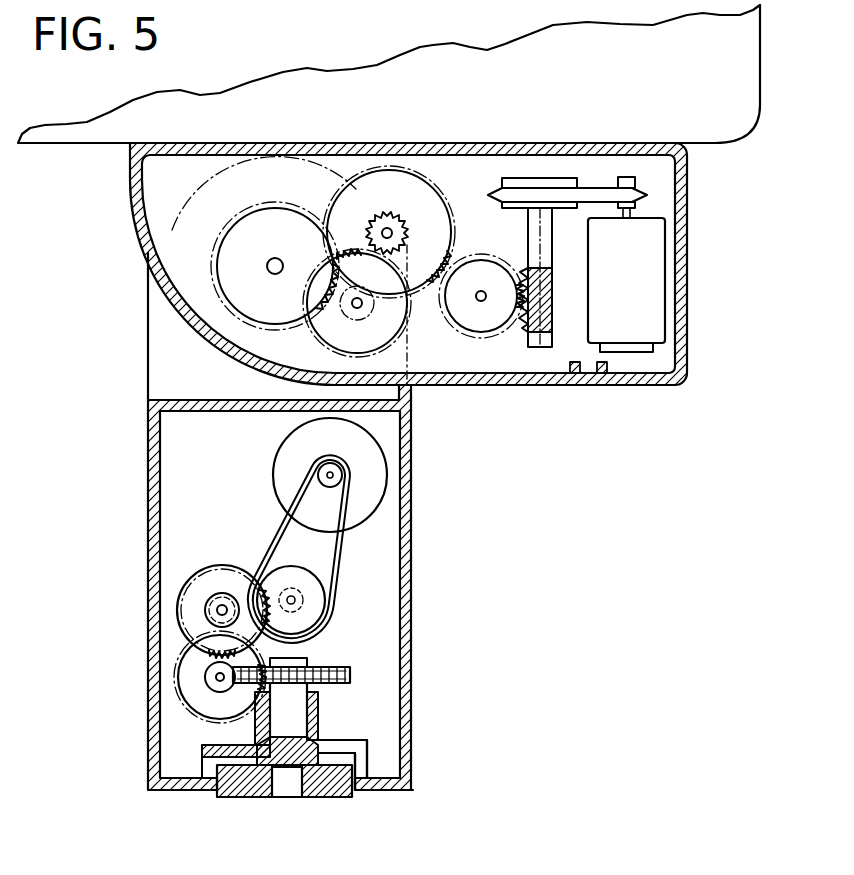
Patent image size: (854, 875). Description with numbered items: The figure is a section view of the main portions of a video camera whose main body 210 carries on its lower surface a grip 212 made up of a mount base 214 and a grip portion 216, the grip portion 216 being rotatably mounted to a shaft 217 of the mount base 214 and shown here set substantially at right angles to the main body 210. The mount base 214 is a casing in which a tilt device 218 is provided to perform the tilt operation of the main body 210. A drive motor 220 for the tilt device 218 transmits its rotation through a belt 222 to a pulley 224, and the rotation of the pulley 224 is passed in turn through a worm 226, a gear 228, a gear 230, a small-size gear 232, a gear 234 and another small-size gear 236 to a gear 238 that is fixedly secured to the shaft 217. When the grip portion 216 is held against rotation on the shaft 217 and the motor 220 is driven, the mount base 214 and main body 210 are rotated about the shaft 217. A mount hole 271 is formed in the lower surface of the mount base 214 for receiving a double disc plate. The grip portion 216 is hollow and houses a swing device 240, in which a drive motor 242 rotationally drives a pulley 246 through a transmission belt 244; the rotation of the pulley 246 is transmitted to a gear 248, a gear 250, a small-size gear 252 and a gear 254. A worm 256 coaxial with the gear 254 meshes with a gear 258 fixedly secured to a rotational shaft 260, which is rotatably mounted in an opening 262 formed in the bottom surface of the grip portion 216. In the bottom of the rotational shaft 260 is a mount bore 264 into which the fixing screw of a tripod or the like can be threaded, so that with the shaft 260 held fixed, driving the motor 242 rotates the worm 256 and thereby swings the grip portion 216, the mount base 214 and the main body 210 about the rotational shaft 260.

The video camera main body 210 is at (484, 91).
The grip 212 is at (547, 498).
The mount base 214 is at (690, 230).
The grip portion 216 is at (412, 531).
The shaft 217 is at (273, 262).
The gear 238 is at (284, 203).
The gear 230 is at (424, 180).
The small-size gear 232 is at (387, 214).
The small-size gear 236 is at (372, 350).
The gear 234 is at (438, 300).
The gear 228 is at (483, 342).
The pulley 224 is at (545, 177).
The worm 226 is at (540, 347).
The belt 222 is at (596, 185).
The tilt device 218 is at (622, 165).
The drive motor 220 is at (657, 297).
The mount hole 271 is at (597, 383).
The swing device 240 is at (223, 478).
The drive motor 242 is at (412, 473).
The transmission belt 244 is at (315, 578).
The pulley 246 is at (324, 608).
The gear 248 is at (273, 557).
The gear 250 is at (190, 572).
The small-size gear 252 is at (200, 617).
The gear 254 is at (182, 679).
The worm 256 is at (178, 692).
The gear 258 is at (373, 667).
The rotational shaft 260 is at (295, 712).
The opening 262 is at (370, 763).
The mount bore 264 is at (290, 797).